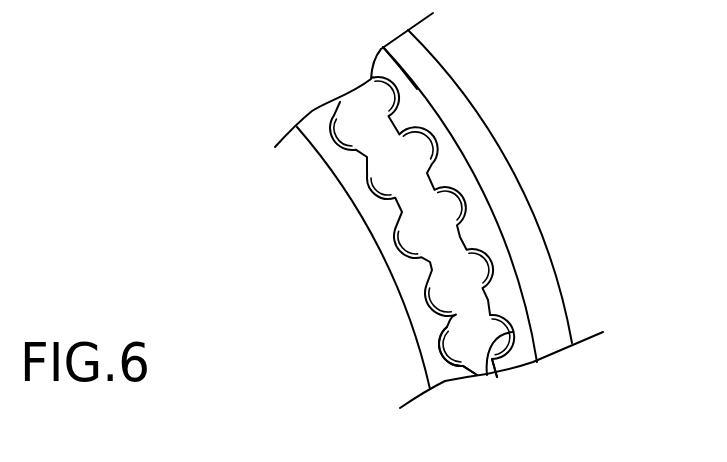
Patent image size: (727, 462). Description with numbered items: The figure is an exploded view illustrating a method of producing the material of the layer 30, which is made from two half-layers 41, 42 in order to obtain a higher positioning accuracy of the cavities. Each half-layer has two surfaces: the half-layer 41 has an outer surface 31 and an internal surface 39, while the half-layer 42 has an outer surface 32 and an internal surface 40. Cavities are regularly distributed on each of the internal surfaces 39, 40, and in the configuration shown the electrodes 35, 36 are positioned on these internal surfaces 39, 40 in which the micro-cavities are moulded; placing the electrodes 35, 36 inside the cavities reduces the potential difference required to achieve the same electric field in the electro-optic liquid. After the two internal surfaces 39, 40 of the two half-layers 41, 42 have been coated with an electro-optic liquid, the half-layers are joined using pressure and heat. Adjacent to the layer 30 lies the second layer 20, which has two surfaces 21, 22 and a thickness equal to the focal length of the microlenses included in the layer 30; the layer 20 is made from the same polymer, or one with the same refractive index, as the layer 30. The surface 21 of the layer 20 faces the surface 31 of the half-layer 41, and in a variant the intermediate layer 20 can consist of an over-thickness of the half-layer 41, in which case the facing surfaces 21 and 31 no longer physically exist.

The second layer 20 is at (550, 337).
The surface of second layer 21 is at (463, 150).
The surface of second layer 22 is at (470, 98).
The layer 30 is at (310, 110).
The outer surface of half-layer 31 is at (417, 89).
The outer surface of half-layer 32 is at (345, 197).
The electrode 35 is at (463, 200).
The electrode 36 is at (395, 235).
The internal surface of half-layer 39 is at (493, 378).
The internal surface of half-layer 40 is at (472, 372).
The half-layer 41 is at (519, 352).
The half-layer 42 is at (437, 362).